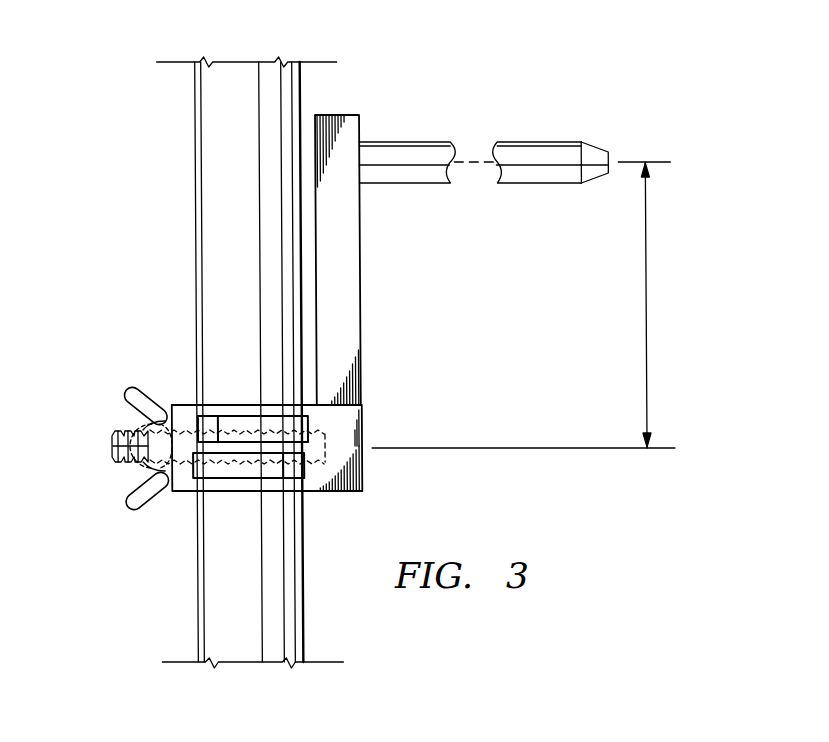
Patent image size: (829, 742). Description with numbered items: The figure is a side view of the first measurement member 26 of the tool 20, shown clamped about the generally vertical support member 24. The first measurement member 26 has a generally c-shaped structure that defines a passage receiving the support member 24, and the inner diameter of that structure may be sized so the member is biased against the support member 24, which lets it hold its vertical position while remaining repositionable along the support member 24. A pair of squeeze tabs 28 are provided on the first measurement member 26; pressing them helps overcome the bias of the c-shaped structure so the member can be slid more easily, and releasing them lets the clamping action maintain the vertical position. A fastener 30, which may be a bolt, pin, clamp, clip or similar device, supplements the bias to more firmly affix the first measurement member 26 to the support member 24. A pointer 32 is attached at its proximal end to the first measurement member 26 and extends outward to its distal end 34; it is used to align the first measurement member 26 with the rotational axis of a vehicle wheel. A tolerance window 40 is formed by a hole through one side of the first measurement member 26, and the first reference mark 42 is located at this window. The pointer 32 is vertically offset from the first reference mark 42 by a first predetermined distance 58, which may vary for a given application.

The tool 20 is at (112, 243).
The support member 24 is at (197, 600).
The first measurement member 26 is at (182, 492).
The squeeze tabs 28 is at (250, 414).
The fastener 30 is at (138, 507).
The pointer 32 is at (537, 142).
The distal end 34 is at (598, 146).
The tolerance window 40 is at (155, 421).
The first reference mark 42 is at (150, 470).
The first predetermined distance 58 is at (648, 305).